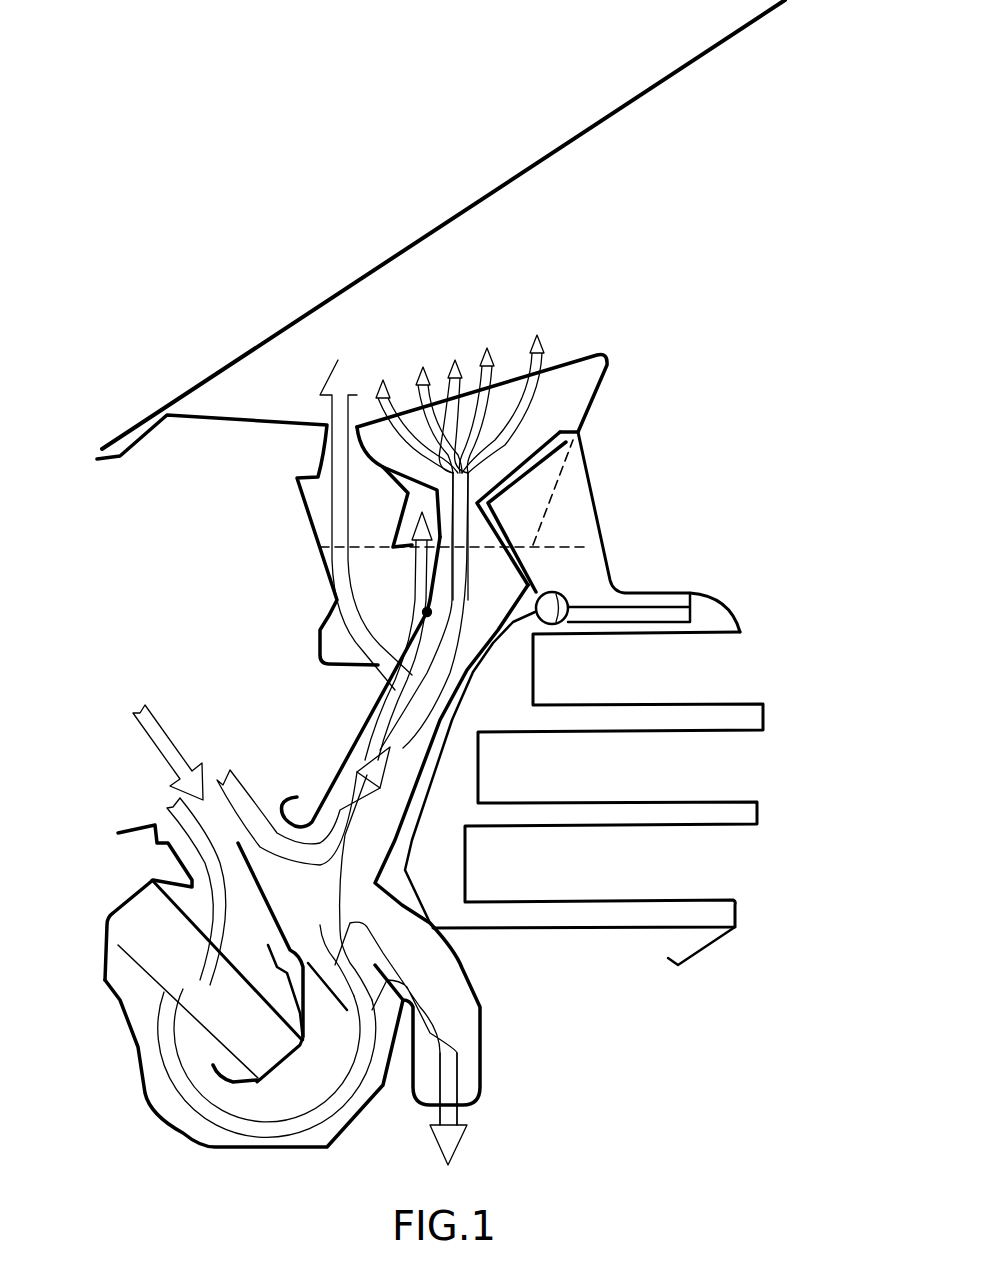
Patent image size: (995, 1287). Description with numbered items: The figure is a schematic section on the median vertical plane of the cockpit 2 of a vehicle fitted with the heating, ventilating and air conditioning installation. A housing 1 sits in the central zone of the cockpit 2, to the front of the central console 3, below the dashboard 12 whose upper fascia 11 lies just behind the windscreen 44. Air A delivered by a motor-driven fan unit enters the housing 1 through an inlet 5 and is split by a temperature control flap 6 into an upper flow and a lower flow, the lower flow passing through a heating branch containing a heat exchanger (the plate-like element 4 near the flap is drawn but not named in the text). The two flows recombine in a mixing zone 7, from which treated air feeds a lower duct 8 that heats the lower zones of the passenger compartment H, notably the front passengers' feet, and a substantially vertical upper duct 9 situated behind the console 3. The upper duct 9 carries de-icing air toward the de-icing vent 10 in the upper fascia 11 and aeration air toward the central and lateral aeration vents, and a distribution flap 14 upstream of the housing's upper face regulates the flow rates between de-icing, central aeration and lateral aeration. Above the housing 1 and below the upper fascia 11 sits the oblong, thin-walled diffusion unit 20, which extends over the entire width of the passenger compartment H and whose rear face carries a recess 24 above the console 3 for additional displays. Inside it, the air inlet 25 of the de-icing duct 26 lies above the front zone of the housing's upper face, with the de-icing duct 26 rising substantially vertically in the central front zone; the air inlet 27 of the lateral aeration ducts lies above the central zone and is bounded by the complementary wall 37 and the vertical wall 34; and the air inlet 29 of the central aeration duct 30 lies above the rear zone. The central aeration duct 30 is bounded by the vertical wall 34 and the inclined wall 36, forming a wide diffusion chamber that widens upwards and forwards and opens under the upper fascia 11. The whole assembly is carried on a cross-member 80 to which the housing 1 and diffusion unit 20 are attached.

The housing 1 is at (143, 1100).
The cockpit 2 is at (635, 375).
The central console 3 is at (760, 680).
The plate 4 is at (167, 962).
The inlet 5 is at (158, 814).
The temperature control flap 6 is at (218, 928).
The mixing zone 7 is at (309, 916).
The lower duct 8 is at (467, 1042).
The upper duct 9 is at (353, 723).
The de-icing vent 10 is at (363, 403).
The upper fascia 11 is at (410, 397).
The dashboard 12 is at (580, 320).
The distribution flap 14 is at (387, 640).
The diffusion unit 20 is at (268, 500).
The recess 24 is at (532, 489).
The air inlet of the de-icing duct 25 is at (327, 550).
The de-icing duct 26 is at (318, 478).
The air inlet of the lateral aeration ducts 27 is at (408, 548).
The air inlet of the central aeration duct 29 is at (525, 577).
The central aeration duct 30 is at (487, 425).
The vertical wall 34 is at (490, 458).
The inclined wall 36 is at (468, 378).
The complementary wall 37 is at (397, 528).
The windscreen 44 is at (430, 217).
The cross-member 80 is at (613, 586).
The air A is at (175, 830).
The passenger compartment H is at (808, 816).